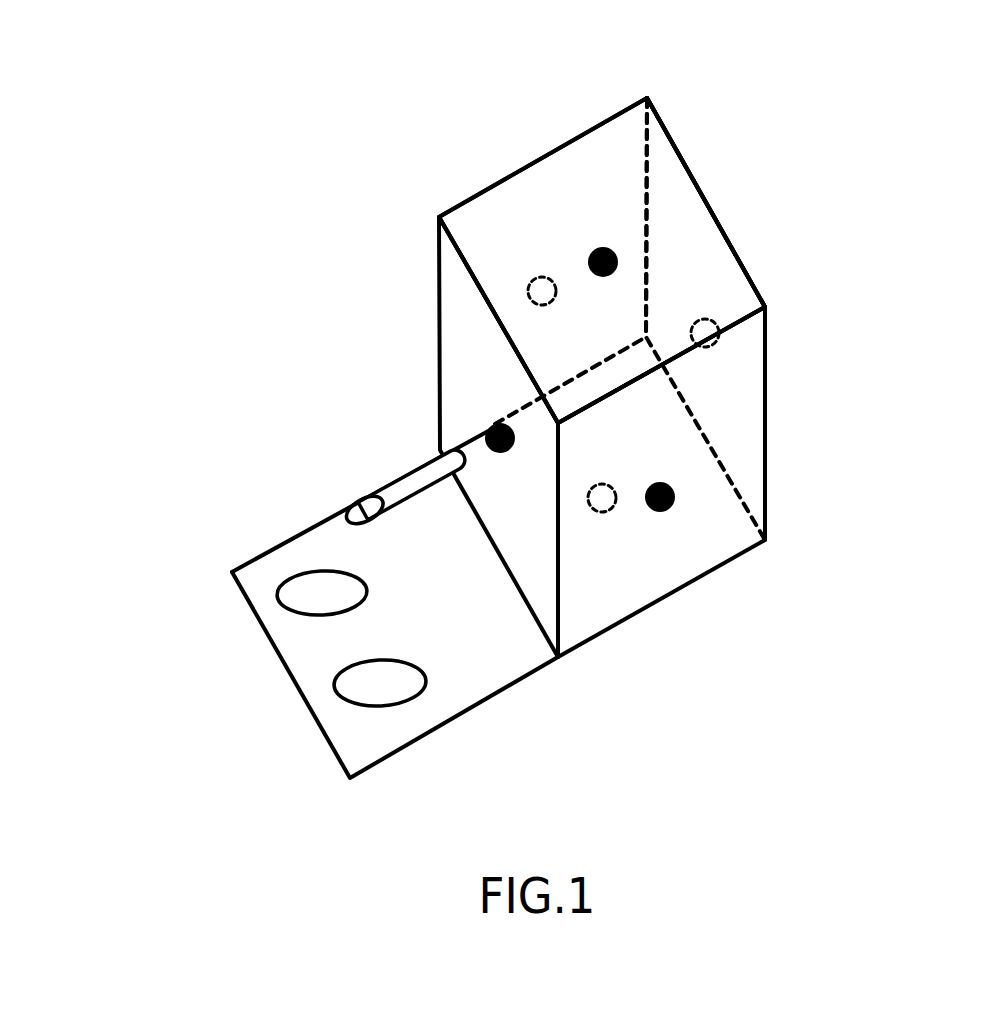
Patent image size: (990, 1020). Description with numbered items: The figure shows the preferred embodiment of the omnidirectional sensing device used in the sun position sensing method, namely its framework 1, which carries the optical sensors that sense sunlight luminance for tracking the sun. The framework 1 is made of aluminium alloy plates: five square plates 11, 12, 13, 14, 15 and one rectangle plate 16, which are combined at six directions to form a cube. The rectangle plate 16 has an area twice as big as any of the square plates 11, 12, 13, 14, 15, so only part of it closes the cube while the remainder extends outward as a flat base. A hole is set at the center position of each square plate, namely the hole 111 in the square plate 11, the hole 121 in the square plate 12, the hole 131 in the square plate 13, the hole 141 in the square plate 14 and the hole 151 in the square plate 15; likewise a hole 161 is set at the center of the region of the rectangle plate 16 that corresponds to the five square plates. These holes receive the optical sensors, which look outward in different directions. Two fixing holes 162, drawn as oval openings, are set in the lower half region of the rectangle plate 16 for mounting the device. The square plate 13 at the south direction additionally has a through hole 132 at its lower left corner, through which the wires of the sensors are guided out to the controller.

The framework 1 is at (250, 133).
The square plate 11 is at (733, 453).
The hole 111 is at (675, 498).
The square plate 12 is at (543, 197).
The hole 121 is at (537, 276).
The square plate 13 is at (458, 332).
The hole 131 is at (488, 430).
The through hole 132 is at (412, 483).
The square plate 14 is at (735, 290).
The hole 141 is at (714, 341).
The square plate 15 is at (672, 215).
The hole 151 is at (607, 248).
The rectangle plate 16 is at (637, 582).
The hole 161 is at (602, 513).
The fixing holes 162 is at (283, 608).